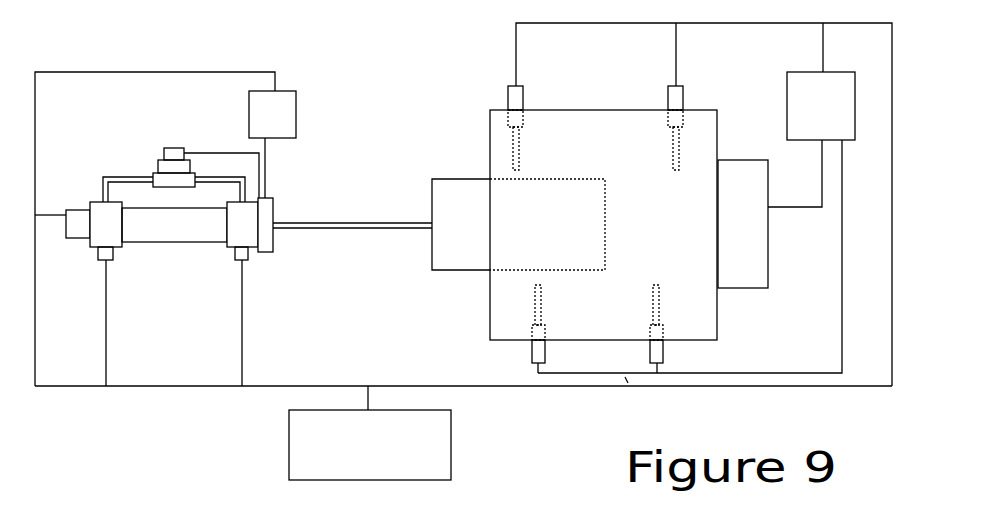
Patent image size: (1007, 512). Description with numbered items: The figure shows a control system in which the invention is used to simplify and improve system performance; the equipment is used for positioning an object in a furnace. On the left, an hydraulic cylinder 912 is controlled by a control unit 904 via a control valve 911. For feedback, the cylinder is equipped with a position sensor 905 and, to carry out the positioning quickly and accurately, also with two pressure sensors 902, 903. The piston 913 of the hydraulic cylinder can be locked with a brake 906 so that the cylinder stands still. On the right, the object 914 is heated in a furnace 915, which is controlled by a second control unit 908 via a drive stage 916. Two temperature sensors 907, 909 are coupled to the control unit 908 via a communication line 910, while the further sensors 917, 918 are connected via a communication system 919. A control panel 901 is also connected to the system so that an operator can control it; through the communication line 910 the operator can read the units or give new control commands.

The control panel 901 is at (391, 433).
The pressure sensor 902 is at (123, 294).
The pressure sensor 903 is at (225, 294).
The control unit 904 is at (297, 143).
The position sensor 905 is at (62, 210).
The brake 906 is at (290, 220).
The temperature sensor 907 is at (537, 117).
The control unit 908 is at (831, 92).
The temperature sensor 909 is at (698, 117).
The communication line 910 is at (463, 204).
The control valve 911 is at (181, 160).
The hydraulic cylinder 912 is at (174, 225).
The piston 913 is at (352, 212).
The object 914 is at (518, 209).
The furnace 915 is at (603, 210).
The drive stage 916 is at (770, 214).
The sensor 917 is at (559, 330).
The sensor 918 is at (678, 330).
The communication system 919 is at (690, 261).